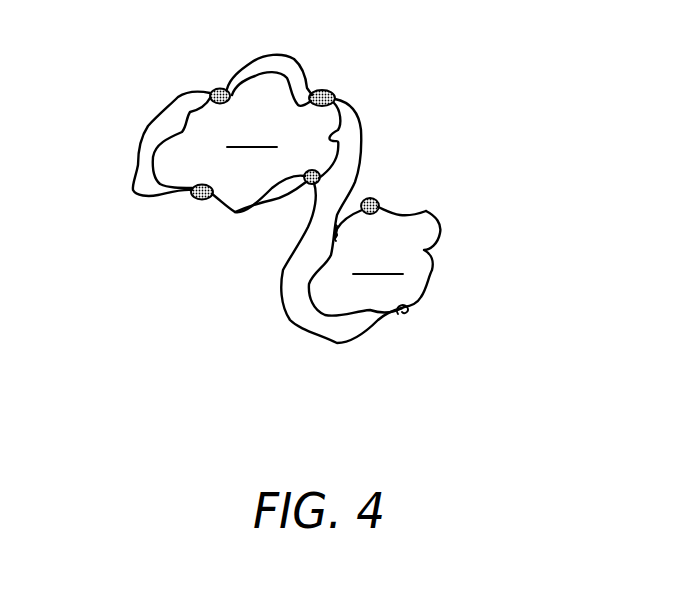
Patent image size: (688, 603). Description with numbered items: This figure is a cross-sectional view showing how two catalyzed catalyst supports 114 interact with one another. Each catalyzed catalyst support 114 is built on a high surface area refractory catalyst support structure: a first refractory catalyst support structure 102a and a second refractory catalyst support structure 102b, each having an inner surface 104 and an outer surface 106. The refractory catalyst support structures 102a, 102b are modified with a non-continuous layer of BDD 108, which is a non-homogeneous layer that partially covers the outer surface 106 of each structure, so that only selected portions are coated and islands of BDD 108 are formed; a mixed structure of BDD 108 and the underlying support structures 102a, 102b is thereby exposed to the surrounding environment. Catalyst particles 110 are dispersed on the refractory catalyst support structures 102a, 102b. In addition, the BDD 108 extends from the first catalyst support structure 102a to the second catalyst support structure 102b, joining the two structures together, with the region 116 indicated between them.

The first high surface area refractory catalyst support structure 102a is at (236, 125).
The second high surface area refractory catalyst support structure 102b is at (353, 221).
The inner surface 104 is at (239, 178).
The outer surface 106 is at (330, 135).
The BDD 108 is at (149, 162).
The catalyst particles 110 is at (218, 90).
The catalyzed catalyst support 114 is at (122, 103).
The intercellular space 116 is at (520, 103).